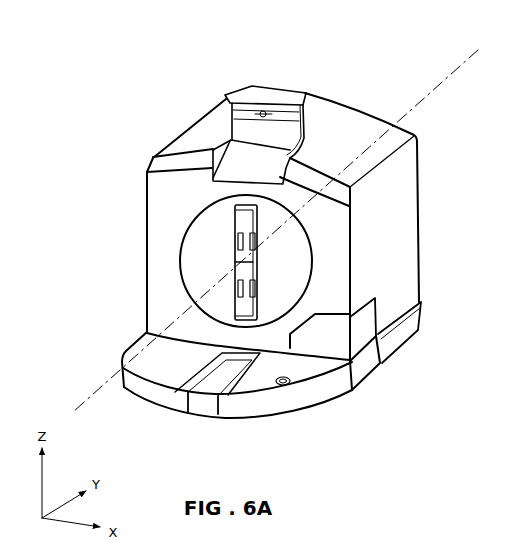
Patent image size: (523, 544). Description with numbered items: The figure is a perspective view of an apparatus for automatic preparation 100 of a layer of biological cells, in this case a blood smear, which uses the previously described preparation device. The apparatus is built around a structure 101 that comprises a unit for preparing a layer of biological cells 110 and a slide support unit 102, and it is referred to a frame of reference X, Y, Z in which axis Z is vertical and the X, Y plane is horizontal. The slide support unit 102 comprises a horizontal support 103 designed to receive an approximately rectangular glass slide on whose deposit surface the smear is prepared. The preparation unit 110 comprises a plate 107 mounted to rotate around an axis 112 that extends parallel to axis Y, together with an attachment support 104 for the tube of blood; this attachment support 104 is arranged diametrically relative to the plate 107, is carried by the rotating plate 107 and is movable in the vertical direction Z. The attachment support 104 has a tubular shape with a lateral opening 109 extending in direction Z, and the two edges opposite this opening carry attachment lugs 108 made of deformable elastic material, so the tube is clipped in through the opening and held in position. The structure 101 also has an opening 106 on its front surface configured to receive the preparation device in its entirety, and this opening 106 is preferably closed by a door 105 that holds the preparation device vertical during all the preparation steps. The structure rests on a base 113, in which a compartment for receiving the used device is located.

The apparatus for automatic preparation 100 is at (119, 167).
The structure 101 is at (379, 384).
The slide support unit 102 is at (228, 402).
The horizontal support 103 is at (212, 393).
The attachment support 104 is at (253, 262).
The door 105 is at (279, 84).
The opening 106 is at (350, 136).
The plate 107 is at (256, 278).
The attachment lugs 108 is at (254, 293).
The lateral opening 109 is at (246, 221).
The unit for preparing a layer of biological cells 110 is at (177, 256).
The axis 112 is at (462, 68).
The base 113 is at (272, 415).